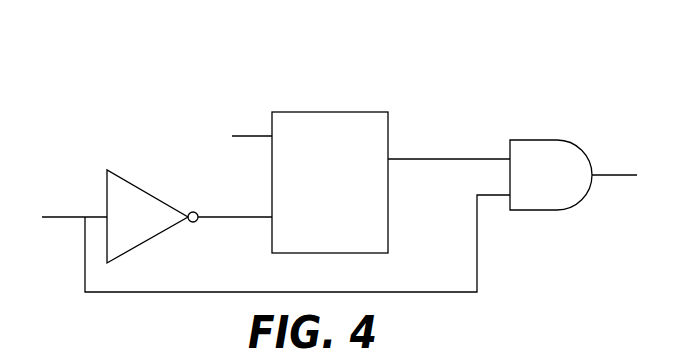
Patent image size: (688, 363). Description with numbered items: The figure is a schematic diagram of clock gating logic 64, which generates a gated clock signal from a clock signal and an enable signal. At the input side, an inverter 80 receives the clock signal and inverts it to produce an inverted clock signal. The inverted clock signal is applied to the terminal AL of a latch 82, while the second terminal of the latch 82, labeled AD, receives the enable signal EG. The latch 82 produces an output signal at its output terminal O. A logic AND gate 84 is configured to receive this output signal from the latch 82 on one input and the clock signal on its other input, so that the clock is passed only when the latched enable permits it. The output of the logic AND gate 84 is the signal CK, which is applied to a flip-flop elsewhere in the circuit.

The clock gating logic 64 is at (332, 153).
The inverter 80 is at (128, 180).
The latch 82 is at (312, 112).
The logic AND gate 84 is at (562, 140).